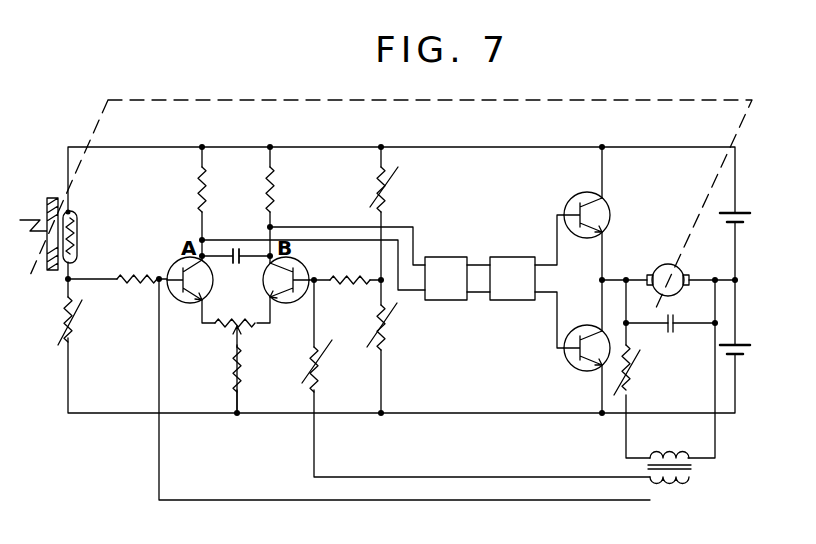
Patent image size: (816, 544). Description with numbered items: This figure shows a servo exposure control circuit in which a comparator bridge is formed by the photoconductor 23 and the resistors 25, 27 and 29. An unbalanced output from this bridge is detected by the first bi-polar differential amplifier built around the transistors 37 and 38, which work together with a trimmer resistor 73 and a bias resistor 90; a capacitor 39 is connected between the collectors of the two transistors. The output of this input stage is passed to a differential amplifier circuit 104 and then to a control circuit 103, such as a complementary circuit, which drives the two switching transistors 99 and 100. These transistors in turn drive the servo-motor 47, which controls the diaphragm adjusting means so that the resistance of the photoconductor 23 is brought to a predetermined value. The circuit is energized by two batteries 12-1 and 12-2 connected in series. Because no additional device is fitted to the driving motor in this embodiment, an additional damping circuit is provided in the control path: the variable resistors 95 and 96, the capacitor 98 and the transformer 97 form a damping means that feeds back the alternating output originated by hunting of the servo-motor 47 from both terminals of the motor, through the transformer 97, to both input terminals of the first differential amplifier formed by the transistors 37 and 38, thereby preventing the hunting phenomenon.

The photoconductor 23 is at (78, 232).
The resistor 25 is at (73, 318).
The resistor 27 is at (394, 173).
The resistor 29 is at (388, 318).
The transistor 37 is at (168, 268).
The transistor 38 is at (310, 266).
The capacitor 39 is at (239, 264).
The servo-motor 47 is at (668, 263).
The trimmer resistor 73 is at (237, 318).
The bias resistor 90 is at (241, 357).
The variable resistor 95 is at (320, 373).
The variable resistor 96 is at (631, 376).
The transformer 97 is at (692, 468).
The capacitor 98 is at (675, 333).
The switching transistor 99 is at (606, 200).
The switching transistor 100 is at (576, 326).
The control circuit 103 is at (510, 300).
The differential amplifier circuit 104 is at (448, 300).
The battery 12-1 is at (751, 345).
The battery 12-2 is at (751, 213).